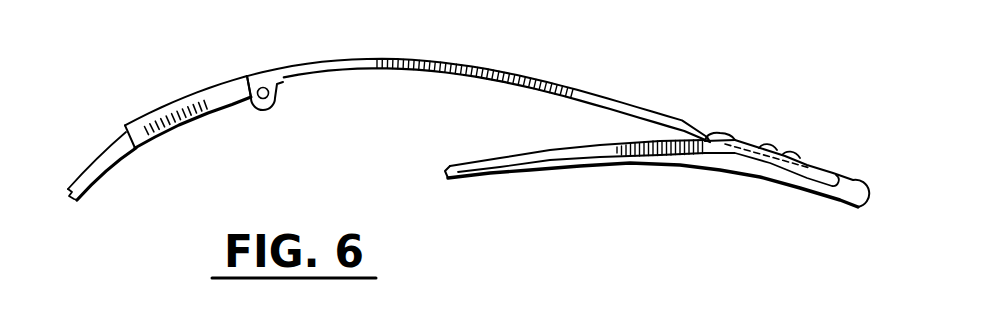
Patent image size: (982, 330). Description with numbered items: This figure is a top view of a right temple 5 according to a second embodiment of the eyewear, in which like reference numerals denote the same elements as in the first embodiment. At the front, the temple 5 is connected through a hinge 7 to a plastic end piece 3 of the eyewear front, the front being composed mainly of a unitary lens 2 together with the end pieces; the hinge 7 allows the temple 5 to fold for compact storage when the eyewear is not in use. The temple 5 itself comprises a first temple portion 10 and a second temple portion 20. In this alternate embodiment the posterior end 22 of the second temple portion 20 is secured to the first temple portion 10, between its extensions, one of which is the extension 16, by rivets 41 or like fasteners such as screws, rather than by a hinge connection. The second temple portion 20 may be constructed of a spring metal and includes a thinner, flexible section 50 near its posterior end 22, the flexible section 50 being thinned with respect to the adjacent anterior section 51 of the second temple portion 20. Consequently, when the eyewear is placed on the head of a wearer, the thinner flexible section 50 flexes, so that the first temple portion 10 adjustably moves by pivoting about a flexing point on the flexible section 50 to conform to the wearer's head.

The unitary lens 2 is at (120, 157).
The end piece 3 is at (198, 95).
The temple 5 is at (365, 57).
The hinge 7 is at (263, 88).
The first temple portion 10 is at (593, 157).
The extension 16 is at (730, 135).
The second temple portion 20 is at (468, 62).
The posterior end 22 is at (811, 163).
The rivets 41 is at (764, 147).
The flexible section 50 is at (700, 137).
The anterior section 51 is at (577, 83).